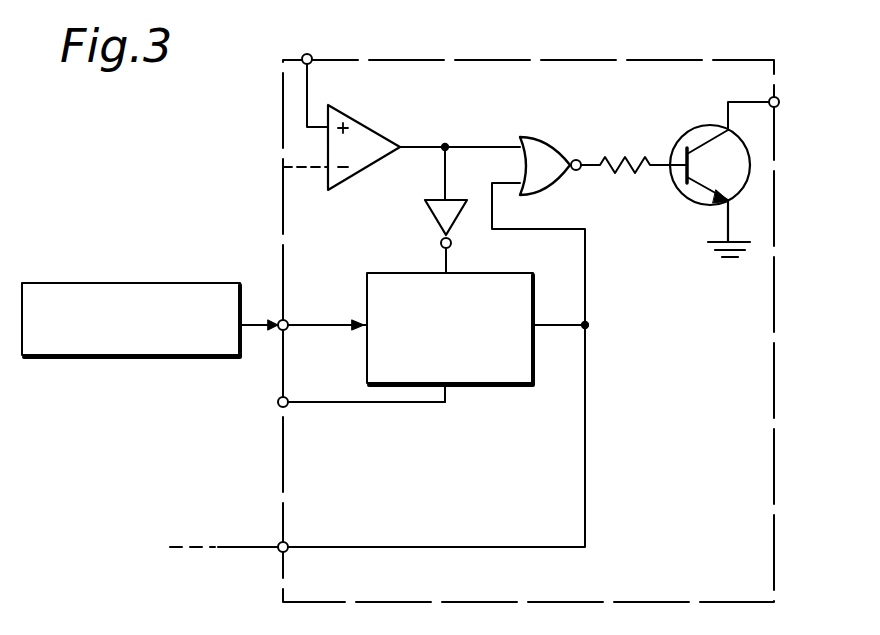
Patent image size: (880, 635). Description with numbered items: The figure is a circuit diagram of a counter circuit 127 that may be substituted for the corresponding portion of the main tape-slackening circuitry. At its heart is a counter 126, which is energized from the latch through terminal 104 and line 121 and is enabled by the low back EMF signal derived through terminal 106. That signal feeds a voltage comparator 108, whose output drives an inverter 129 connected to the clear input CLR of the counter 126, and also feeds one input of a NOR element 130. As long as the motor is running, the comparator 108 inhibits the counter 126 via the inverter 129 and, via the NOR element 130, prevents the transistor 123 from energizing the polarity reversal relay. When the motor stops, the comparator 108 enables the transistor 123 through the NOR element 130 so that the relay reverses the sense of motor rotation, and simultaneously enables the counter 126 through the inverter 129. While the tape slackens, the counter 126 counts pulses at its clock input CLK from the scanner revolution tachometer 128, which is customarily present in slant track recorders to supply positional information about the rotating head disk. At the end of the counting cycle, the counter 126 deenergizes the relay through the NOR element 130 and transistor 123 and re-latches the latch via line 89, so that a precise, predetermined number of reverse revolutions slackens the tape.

The line 89 is at (224, 546).
The terminal 104 is at (278, 402).
The terminal 106 is at (310, 53).
The voltage comparator 108 is at (374, 127).
The line 121 is at (388, 404).
The transistor 123 is at (740, 160).
The counter 126 is at (367, 290).
The circuit 127 is at (775, 392).
The scanner revolution tachometer 128 is at (148, 282).
The inverter 129 is at (428, 212).
The NOR element 130 is at (548, 149).